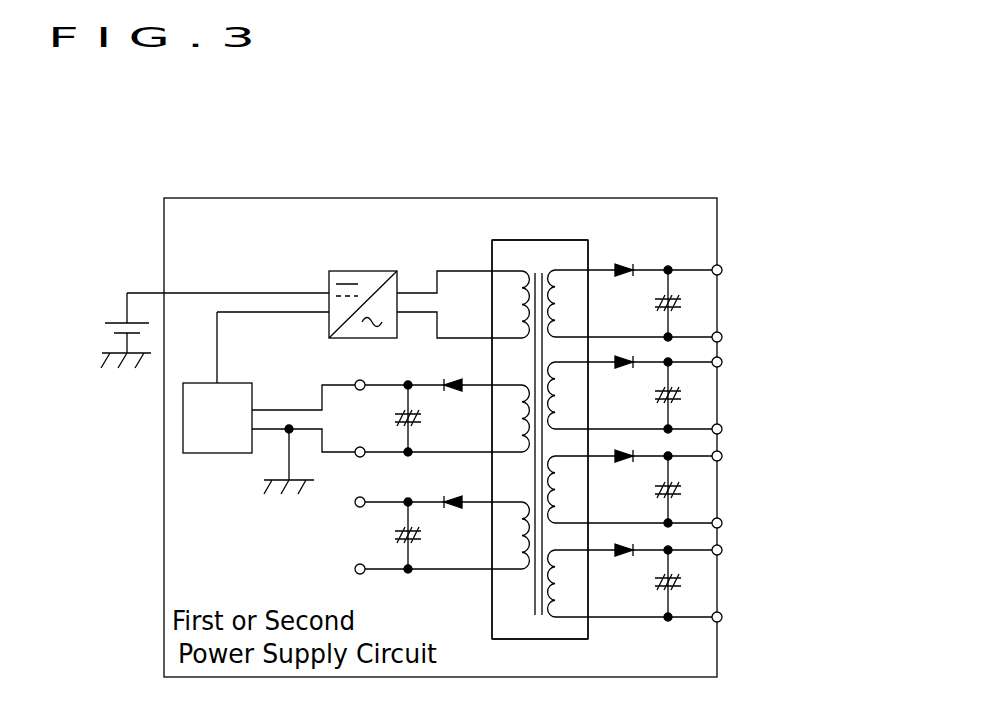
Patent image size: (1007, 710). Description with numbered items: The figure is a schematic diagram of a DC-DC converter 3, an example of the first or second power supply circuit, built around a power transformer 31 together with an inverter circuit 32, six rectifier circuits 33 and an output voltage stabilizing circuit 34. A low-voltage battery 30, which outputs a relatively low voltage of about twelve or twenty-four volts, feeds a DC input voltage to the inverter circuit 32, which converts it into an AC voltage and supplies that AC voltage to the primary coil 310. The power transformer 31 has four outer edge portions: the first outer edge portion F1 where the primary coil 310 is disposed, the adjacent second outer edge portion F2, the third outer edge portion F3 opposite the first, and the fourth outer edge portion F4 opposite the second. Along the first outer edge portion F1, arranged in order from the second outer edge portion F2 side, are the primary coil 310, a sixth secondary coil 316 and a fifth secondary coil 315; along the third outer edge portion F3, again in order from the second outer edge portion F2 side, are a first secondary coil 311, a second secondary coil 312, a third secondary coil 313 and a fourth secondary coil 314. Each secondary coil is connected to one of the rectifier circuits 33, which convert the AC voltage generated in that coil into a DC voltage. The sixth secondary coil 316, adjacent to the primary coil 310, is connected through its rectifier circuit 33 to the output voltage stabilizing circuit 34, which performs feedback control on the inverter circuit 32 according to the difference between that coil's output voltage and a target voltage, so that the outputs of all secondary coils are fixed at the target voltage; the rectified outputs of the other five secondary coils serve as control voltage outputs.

The DC-DC converter 3 is at (711, 197).
The low-voltage battery 30 is at (103, 309).
The power transformer 31 is at (533, 237).
The inverter circuit 32 is at (360, 270).
The rectifier circuits 33 is at (690, 264).
The output voltage stabilizing circuit 34 is at (218, 456).
The primary coil 310 is at (506, 269).
The first secondary coil 311 is at (572, 264).
The second secondary coil 312 is at (562, 399).
The third secondary coil 313 is at (562, 489).
The fourth secondary coil 314 is at (562, 582).
The fifth secondary coil 315 is at (506, 491).
The sixth secondary coil 316 is at (506, 377).
The first outer edge portion F1 is at (491, 583).
The second outer edge portion F2 is at (522, 239).
The third outer edge portion F3 is at (590, 622).
The fourth outer edge portion F4 is at (537, 641).